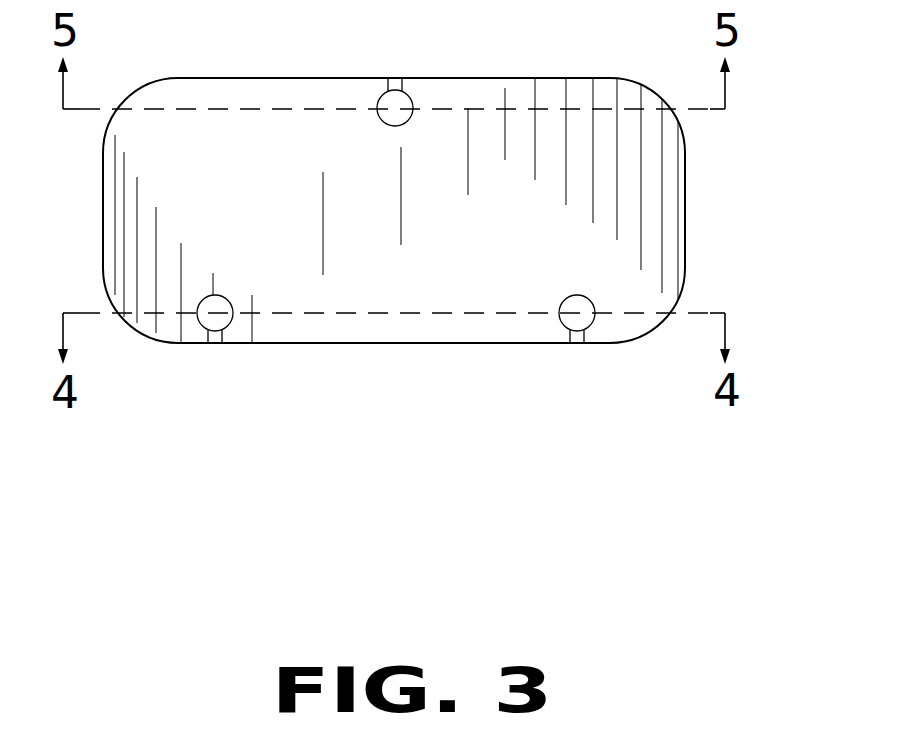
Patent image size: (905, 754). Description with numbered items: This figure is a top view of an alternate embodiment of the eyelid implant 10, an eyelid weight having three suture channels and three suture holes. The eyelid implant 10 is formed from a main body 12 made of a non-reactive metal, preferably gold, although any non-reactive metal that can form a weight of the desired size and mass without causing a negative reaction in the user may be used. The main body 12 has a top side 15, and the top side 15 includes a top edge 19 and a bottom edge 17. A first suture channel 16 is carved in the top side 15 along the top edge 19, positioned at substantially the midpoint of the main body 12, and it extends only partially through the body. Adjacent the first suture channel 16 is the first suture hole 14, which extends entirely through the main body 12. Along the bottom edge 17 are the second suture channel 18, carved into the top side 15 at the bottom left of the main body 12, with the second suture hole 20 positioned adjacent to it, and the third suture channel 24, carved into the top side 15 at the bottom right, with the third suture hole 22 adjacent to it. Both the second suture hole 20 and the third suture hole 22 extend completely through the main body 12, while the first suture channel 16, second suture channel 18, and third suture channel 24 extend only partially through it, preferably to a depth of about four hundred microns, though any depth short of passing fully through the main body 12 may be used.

The eyelid implant 10 is at (426, 269).
The main body 12 is at (503, 330).
The first suture hole 14 is at (412, 100).
The top side 15 is at (673, 240).
The first suture channel 16 is at (388, 88).
The bottom edge 17 is at (383, 343).
The second suture channel 18 is at (210, 343).
The top edge 19 is at (550, 78).
The second suture hole 20 is at (232, 322).
The third suture hole 22 is at (590, 325).
The third suture channel 24 is at (575, 343).